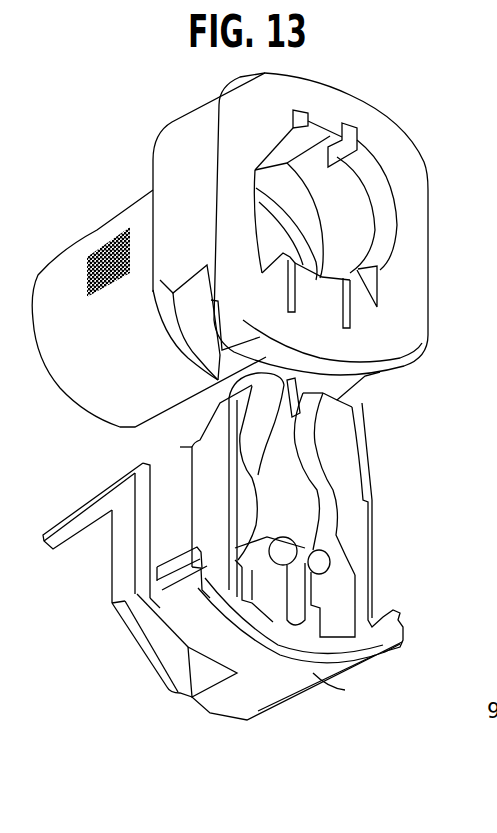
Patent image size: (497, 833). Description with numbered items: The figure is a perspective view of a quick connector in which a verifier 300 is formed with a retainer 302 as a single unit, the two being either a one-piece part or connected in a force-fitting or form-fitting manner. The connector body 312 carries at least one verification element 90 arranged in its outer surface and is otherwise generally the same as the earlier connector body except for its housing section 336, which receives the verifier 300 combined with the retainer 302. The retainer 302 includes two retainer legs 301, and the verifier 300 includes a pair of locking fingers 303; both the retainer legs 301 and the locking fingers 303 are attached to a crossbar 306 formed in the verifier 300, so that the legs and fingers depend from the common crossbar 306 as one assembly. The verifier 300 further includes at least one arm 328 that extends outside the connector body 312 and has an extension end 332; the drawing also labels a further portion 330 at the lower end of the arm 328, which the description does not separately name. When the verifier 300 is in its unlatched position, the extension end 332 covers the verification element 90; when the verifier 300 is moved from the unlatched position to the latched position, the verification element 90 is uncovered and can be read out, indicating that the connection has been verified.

The connector body 312 is at (410, 108).
The verification element 90 is at (103, 246).
The housing section 336 is at (186, 306).
The verifier 300 is at (214, 712).
The retainer legs 301 is at (197, 445).
The retainer 302 is at (250, 475).
The locking fingers 303 is at (283, 590).
The crossbar 306 is at (330, 686).
The arm 328 is at (118, 565).
The foot 330 is at (168, 685).
The extension end 332 is at (78, 510).